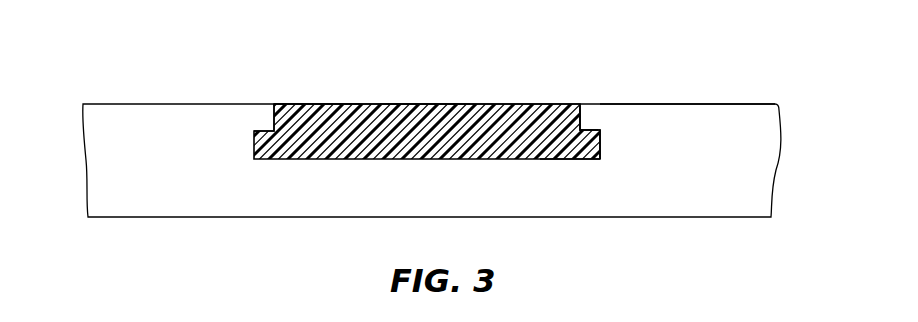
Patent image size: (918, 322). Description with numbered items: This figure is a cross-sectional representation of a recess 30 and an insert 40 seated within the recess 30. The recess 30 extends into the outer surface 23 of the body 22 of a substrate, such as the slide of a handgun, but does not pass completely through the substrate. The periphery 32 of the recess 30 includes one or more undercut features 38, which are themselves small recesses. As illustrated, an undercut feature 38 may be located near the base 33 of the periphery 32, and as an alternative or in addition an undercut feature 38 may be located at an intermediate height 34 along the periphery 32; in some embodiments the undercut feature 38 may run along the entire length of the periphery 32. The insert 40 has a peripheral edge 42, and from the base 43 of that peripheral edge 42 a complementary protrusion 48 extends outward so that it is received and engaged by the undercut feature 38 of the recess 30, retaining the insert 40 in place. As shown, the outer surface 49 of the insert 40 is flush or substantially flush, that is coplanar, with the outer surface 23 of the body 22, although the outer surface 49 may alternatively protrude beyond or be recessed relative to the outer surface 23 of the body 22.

The body 22 is at (742, 89).
The outer surface 23 is at (665, 104).
The recess 30 is at (422, 113).
The periphery 32 is at (314, 74).
The base 33 is at (295, 50).
The intermediate height 34 is at (287, 118).
The undercut feature 38 is at (583, 126).
The insert 40 is at (478, 118).
The peripheral edge 42 is at (605, 130).
The base 43 is at (601, 153).
The complementary protrusion 48 is at (588, 159).
The outer surface 49 is at (423, 104).